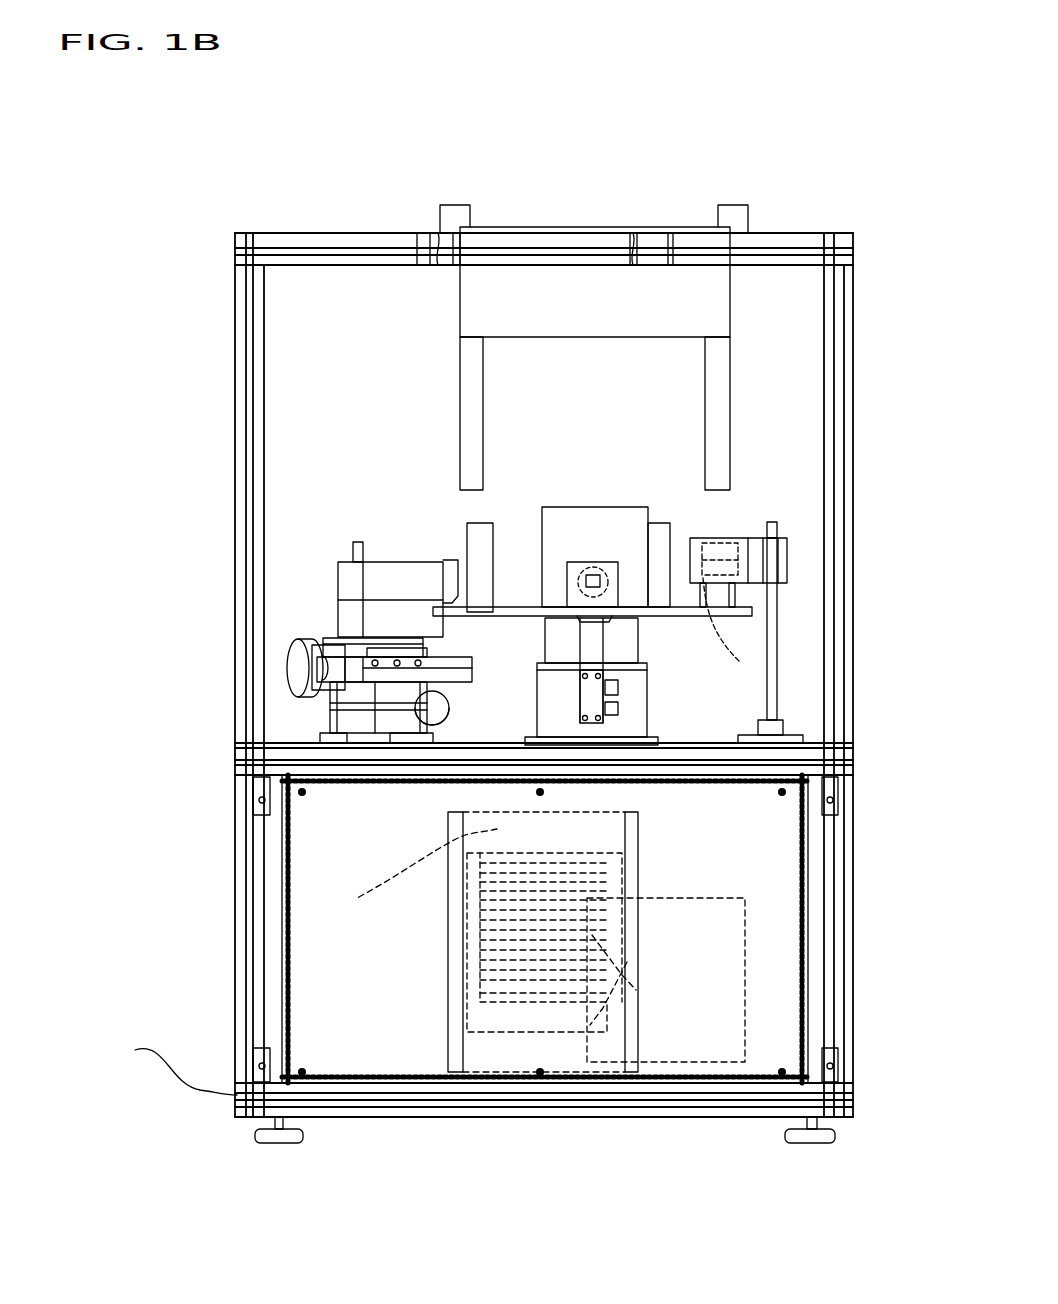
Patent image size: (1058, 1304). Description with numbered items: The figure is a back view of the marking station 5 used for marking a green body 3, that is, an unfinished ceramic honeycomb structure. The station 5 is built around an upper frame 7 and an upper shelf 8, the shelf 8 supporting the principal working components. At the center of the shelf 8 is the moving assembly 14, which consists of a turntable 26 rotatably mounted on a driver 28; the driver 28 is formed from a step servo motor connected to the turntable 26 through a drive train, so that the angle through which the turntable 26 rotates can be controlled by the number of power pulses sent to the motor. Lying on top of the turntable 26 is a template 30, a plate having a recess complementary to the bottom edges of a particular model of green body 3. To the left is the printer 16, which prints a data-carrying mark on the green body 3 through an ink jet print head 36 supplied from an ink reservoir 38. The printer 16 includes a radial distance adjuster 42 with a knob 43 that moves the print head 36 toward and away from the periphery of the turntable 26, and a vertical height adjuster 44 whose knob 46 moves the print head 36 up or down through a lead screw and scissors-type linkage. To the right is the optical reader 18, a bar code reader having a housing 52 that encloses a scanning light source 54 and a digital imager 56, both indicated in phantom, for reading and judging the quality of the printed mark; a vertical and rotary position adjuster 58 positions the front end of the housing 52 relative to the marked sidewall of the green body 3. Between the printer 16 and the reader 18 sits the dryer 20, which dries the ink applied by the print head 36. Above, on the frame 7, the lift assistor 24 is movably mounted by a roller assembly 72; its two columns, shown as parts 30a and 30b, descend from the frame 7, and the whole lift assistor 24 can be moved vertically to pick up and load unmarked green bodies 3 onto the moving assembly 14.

The green body 3 is at (610, 522).
The marking station 5 is at (205, 260).
The upper frame 7 is at (783, 243).
The upper shelf 8 is at (237, 755).
The moving assembly 14 is at (664, 630).
The printer 16 is at (338, 650).
The optical reader 18 is at (798, 533).
The dryer 20 is at (568, 596).
The lift assistor 24 is at (637, 319).
The turntable 26 is at (520, 618).
The driver 28 is at (632, 716).
The template 30 is at (683, 604).
The left gantry column 30a is at (460, 457).
The right gantry column 30b is at (733, 425).
The print head 36 is at (458, 598).
The ink reservoir 38 is at (386, 585).
The radial distance adjuster 42 is at (276, 656).
The knob 43 is at (300, 668).
The vertical height adjuster 44 is at (464, 722).
The knob 46 is at (431, 722).
The housing 52 is at (776, 523).
The scanning light source 54 is at (727, 632).
The digital imager 56 is at (703, 542).
The vertical and rotary position adjuster 58 is at (843, 617).
The roller assembly 72 is at (500, 230).